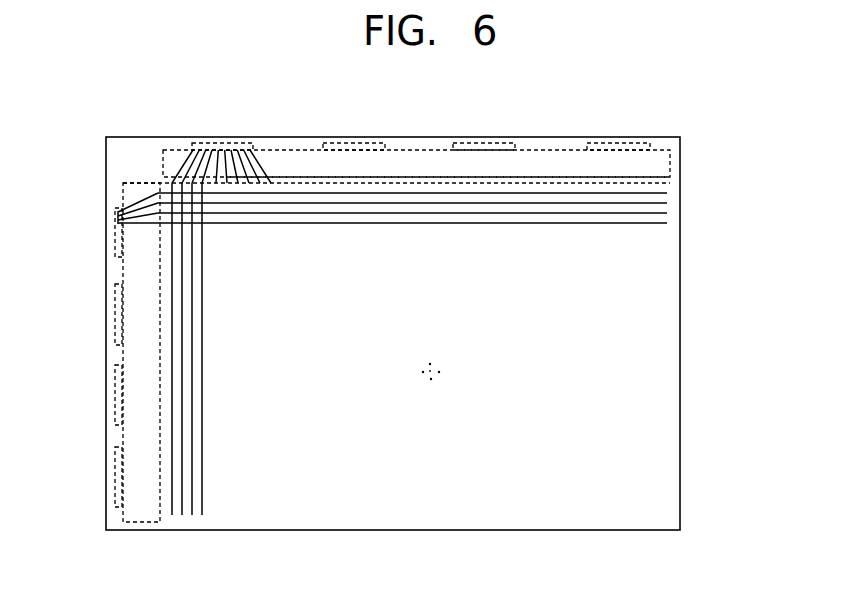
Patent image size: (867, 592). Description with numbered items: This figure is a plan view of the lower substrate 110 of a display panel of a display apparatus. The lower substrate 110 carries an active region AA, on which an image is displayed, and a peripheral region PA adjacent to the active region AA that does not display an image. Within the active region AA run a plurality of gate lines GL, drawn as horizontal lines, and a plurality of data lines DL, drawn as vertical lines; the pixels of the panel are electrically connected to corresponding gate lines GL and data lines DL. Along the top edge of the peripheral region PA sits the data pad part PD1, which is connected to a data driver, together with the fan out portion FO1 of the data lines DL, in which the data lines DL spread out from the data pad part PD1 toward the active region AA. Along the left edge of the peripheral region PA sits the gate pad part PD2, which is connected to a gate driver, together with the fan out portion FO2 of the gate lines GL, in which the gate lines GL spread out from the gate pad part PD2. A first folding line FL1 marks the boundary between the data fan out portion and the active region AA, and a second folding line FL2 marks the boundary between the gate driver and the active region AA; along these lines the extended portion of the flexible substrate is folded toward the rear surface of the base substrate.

The lower substrate 110 is at (681, 443).
The peripheral region PA is at (665, 145).
The active region AA is at (667, 343).
The data pad part PD1 is at (228, 140).
The gate pad part PD2 is at (110, 242).
The fan out portion of the data lines FO1 is at (170, 152).
The fan out portion of the gate lines FO2 is at (123, 188).
The first folding line FL1 is at (677, 187).
The second folding line FL2 is at (163, 520).
The gate lines GL is at (305, 225).
The data lines DL is at (203, 352).